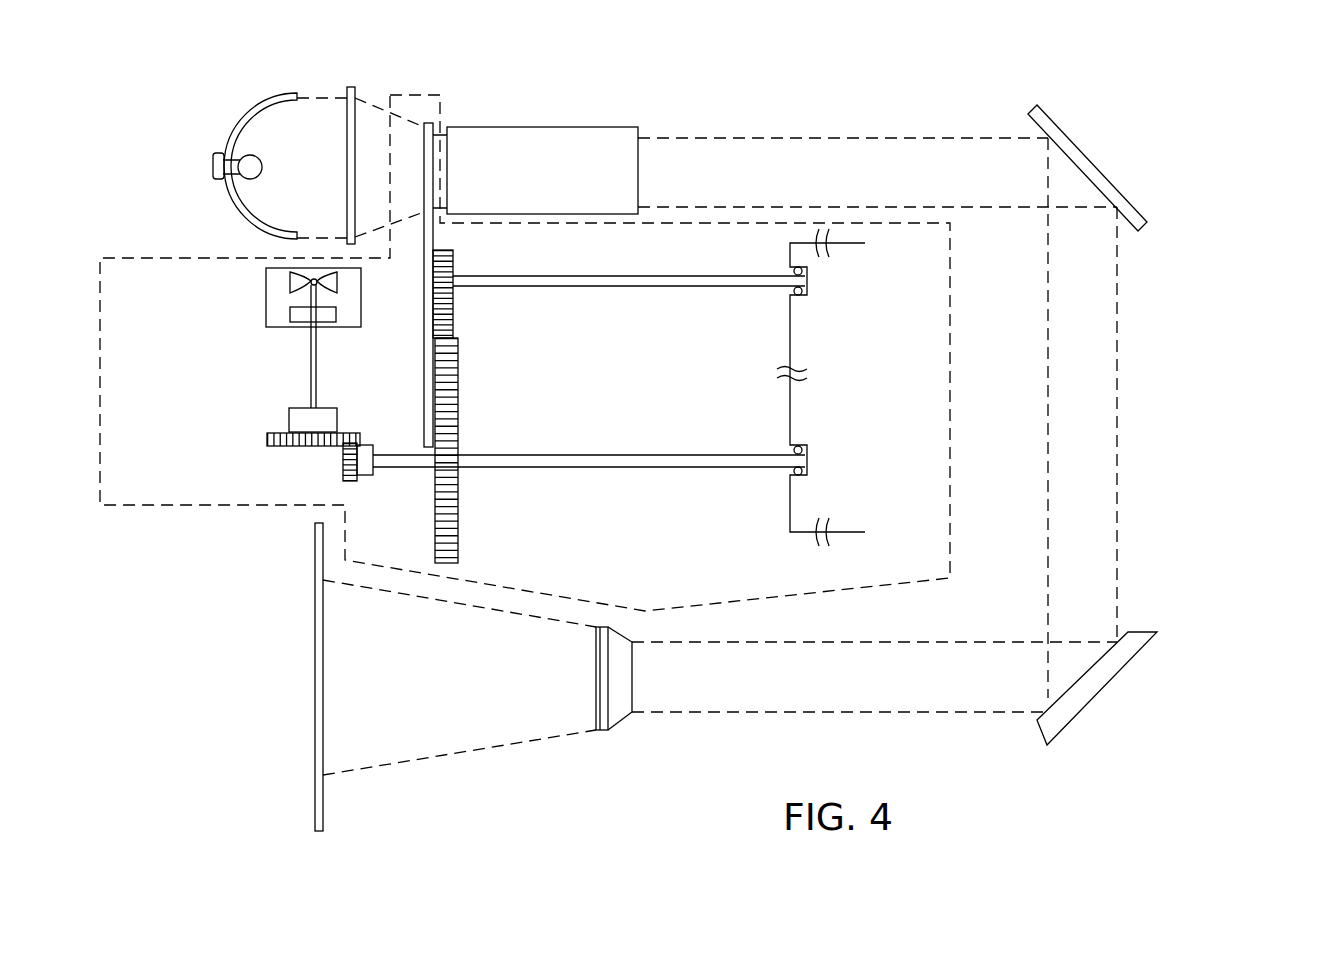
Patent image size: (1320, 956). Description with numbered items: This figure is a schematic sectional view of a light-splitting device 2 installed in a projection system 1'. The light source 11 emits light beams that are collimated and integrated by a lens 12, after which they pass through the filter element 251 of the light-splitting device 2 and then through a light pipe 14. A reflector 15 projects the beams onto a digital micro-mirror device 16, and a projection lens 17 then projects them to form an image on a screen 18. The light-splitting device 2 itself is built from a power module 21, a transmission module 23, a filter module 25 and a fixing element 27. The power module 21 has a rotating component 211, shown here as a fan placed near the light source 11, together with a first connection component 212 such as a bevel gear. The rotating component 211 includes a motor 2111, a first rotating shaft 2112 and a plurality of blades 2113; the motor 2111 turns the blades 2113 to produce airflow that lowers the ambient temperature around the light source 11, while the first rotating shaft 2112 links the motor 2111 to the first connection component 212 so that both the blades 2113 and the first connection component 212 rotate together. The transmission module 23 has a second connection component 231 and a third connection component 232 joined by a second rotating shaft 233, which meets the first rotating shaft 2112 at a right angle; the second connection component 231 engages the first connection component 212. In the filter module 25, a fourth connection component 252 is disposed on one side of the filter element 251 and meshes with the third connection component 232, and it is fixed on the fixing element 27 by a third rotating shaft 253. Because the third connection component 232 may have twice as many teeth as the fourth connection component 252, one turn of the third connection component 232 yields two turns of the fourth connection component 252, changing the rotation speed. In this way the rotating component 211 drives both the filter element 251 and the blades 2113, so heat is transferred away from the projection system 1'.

The projection system 1' is at (132, 67).
The light-splitting device 2 is at (123, 268).
The light source 11 is at (270, 112).
The lens 12 is at (349, 87).
The light pipe 14 is at (572, 132).
The reflector 15 is at (1080, 160).
The digital micro-mirror device 16 is at (1100, 680).
The projection lens 17 is at (618, 710).
The screen 18 is at (318, 787).
The power module 21 is at (1257, 100).
The rotating component 211 is at (1257, 192).
The motor 2111 is at (333, 318).
The first rotating shaft 2112 is at (318, 347).
The blades 2113 is at (293, 285).
The first connection component 212 is at (267, 438).
The transmission module 23 is at (1257, 277).
The second connection component 231 is at (370, 473).
The third connection component 232 is at (458, 547).
The second rotating shaft 233 is at (638, 458).
The filter module 25 is at (1257, 373).
The filter element 251 is at (433, 230).
The fourth connection component 252 is at (453, 263).
The third rotating shaft 253 is at (562, 283).
The fixing element 27 is at (852, 512).